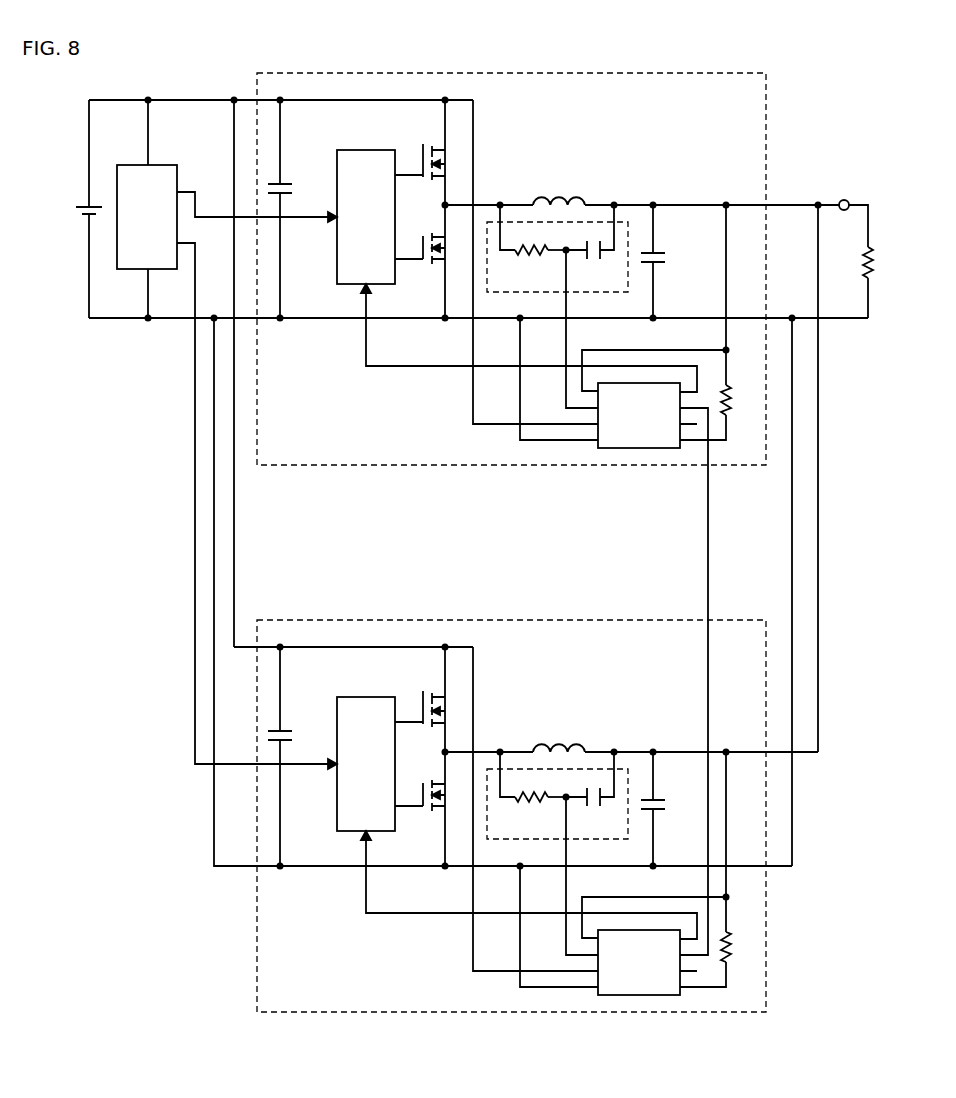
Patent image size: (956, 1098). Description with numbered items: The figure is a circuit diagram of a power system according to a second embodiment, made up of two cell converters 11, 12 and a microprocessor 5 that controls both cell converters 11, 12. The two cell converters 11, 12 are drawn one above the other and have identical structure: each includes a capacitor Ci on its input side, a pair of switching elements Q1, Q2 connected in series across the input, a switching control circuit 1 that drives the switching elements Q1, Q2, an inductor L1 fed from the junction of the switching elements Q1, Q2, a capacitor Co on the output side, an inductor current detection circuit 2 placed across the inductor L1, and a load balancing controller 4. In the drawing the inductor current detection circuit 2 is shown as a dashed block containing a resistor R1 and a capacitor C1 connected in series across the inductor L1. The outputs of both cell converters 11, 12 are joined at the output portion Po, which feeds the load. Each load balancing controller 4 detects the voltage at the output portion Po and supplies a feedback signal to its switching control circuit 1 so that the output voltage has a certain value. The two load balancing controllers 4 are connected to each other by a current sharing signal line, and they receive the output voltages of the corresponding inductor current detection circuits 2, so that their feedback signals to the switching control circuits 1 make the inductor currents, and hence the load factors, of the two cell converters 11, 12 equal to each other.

The switching control circuit 1 is at (366, 150).
The inductor current detection circuit 2 is at (570, 499).
The load balancing controller 4 is at (638, 449).
The microprocessor 5 is at (178, 165).
The cell converter 11 is at (766, 107).
The cell converter 12 is at (766, 924).
The switching element Q1 is at (420, 424).
The switching element Q2 is at (420, 539).
The inductor L1 is at (559, 461).
The resistor R1 is at (533, 522).
The capacitor C1 is at (628, 222).
The capacitor Ci is at (292, 483).
The capacitor Co is at (668, 535).
The output portion Po is at (845, 244).